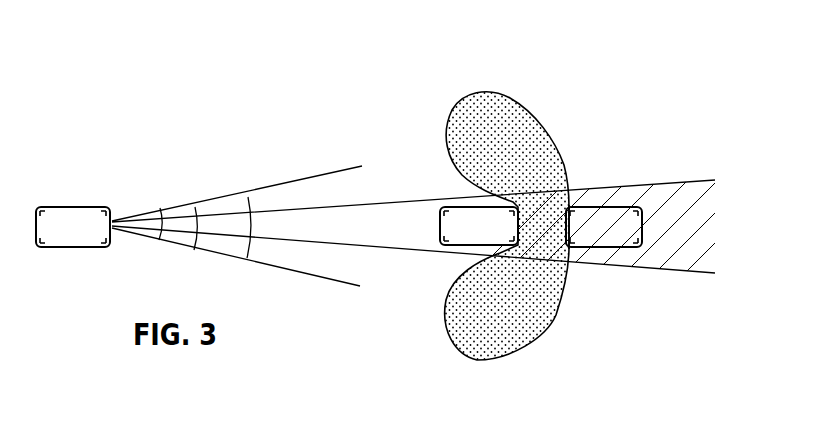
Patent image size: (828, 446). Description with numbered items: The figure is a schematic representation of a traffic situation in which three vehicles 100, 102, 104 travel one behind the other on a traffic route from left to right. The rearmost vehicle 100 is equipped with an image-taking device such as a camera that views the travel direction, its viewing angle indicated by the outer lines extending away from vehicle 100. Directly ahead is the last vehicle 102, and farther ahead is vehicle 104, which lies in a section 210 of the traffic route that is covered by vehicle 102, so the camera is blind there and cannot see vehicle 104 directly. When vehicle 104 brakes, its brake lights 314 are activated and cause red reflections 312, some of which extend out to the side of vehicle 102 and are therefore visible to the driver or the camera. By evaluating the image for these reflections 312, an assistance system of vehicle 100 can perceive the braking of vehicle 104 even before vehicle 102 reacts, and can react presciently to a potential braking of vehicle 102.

The vehicle 100 is at (76, 207).
The vehicle 102 is at (453, 204).
The vehicle 104 is at (612, 207).
The section of the traffic route 210 is at (688, 252).
The red reflections 312 is at (543, 121).
The brake lights 314 is at (573, 207).